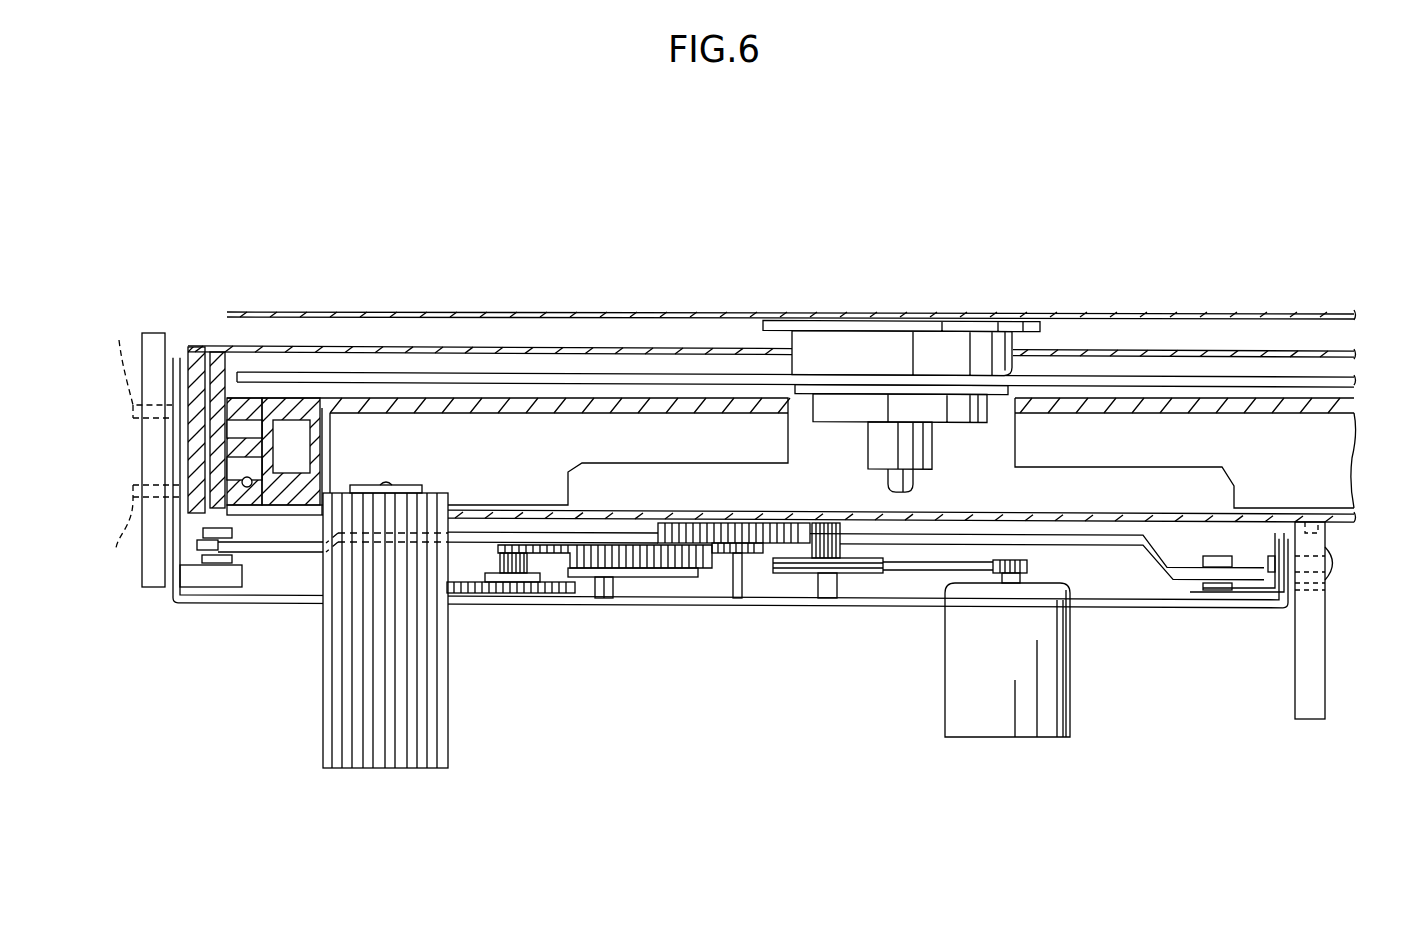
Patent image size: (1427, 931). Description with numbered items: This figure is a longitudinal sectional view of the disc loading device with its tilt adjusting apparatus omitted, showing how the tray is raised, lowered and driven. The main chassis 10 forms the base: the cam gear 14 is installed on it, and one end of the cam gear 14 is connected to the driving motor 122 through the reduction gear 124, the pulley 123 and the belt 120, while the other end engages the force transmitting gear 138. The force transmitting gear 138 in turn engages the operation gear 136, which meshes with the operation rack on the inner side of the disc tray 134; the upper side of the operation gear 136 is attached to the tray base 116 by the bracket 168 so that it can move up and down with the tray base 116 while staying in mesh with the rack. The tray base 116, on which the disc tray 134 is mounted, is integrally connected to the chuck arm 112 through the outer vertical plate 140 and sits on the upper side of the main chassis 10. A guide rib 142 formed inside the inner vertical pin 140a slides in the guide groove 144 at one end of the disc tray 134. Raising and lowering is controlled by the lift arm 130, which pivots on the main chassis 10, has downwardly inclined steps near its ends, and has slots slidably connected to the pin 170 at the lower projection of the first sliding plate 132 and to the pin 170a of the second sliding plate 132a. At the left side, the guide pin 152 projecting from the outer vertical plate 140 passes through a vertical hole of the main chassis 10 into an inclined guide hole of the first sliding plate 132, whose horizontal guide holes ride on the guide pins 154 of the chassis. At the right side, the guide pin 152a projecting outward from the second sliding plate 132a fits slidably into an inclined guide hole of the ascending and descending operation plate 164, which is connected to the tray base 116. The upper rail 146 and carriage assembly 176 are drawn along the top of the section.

The main chassis 10 is at (262, 602).
The cam gear 14 is at (651, 560).
The chuck arm 112 is at (470, 344).
The tray base 116 is at (520, 511).
The belt 120 is at (927, 573).
The driving motor 122 is at (1052, 708).
The pulley 123 is at (803, 575).
The reduction gear 124 is at (763, 523).
The lift arm 130 is at (873, 509).
The first sliding plate 132 is at (155, 332).
The second sliding plate 132a is at (1268, 605).
The disc tray 134 is at (300, 405).
The operation gear 136 is at (428, 730).
The force transmitting gear 138 is at (540, 593).
The outer vertical plate 140 is at (178, 350).
The inner vertical pin 140a is at (213, 350).
The guide rib 142 is at (250, 398).
The guide groove 144 is at (258, 507).
The upper rail 146 is at (622, 312).
The guide pin 152 is at (202, 532).
The guide pin 152a is at (1309, 547).
The guide pin 154 is at (137, 431).
The ascending and descending operation plate 164 is at (1305, 698).
The bracket 168 is at (410, 486).
The pin 170 is at (170, 590).
The pin 170a is at (1185, 453).
The carriage assembly 176 is at (1165, 378).